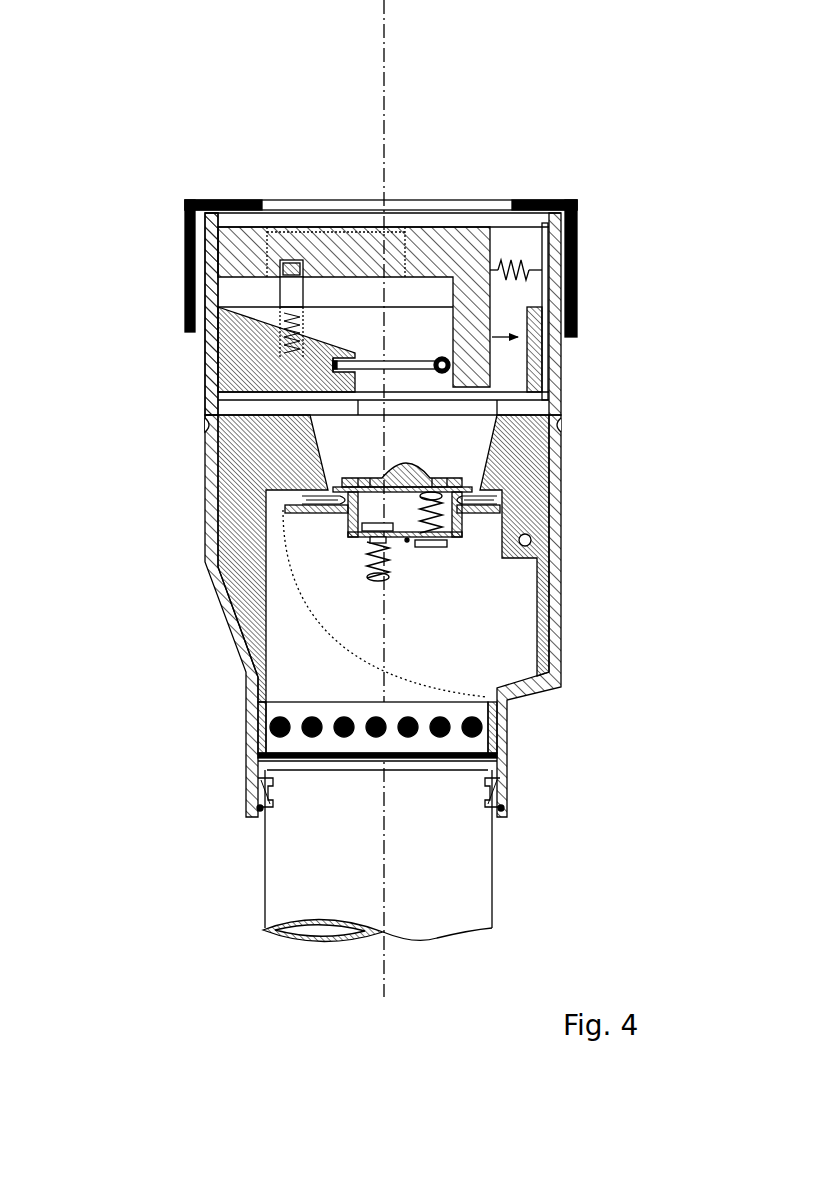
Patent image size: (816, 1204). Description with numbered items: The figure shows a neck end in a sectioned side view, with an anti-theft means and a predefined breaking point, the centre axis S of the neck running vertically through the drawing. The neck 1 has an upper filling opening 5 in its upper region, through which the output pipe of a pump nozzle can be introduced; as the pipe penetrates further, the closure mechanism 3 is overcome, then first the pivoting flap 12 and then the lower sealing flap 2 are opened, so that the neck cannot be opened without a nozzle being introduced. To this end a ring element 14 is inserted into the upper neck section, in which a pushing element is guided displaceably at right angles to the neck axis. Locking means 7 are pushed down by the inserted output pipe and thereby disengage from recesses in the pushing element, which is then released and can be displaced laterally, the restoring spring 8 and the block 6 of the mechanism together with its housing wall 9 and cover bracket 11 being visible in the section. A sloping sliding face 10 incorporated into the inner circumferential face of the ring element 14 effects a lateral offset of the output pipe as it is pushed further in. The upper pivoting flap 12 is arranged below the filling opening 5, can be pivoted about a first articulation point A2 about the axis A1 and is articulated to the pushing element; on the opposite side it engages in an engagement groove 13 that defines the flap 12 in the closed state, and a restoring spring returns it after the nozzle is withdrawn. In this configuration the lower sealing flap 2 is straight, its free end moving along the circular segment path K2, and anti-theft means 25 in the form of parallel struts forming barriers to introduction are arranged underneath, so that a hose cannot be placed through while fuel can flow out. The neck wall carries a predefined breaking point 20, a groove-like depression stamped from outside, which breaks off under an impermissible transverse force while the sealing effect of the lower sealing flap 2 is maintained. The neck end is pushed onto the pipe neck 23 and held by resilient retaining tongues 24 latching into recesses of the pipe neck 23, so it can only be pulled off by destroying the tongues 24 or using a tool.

The neck 1 is at (568, 578).
The lower sealing flap 2 is at (368, 507).
The closure mechanism 3 is at (185, 365).
The upper filling opening 5 is at (427, 413).
The actuator block 6 is at (442, 232).
The locking means 7 is at (290, 293).
The return spring 8 is at (530, 268).
The housing wall 9 is at (222, 384).
The sliding face 10 is at (273, 325).
The cover bracket 11 is at (578, 200).
The upper pivoting flap 12 is at (386, 362).
The engagement groove 13 is at (333, 373).
The ring element 14 is at (537, 355).
The predefined breaking point 20 is at (562, 427).
The pipe neck 23 is at (444, 885).
The resilient retaining tongues 24 is at (485, 783).
The anti-theft means 25 is at (490, 727).
The first axis A1 is at (436, 358).
The first articulation point A2 is at (562, 542).
The circular segment path K2 is at (287, 540).
The symmetry axis S is at (385, 52).